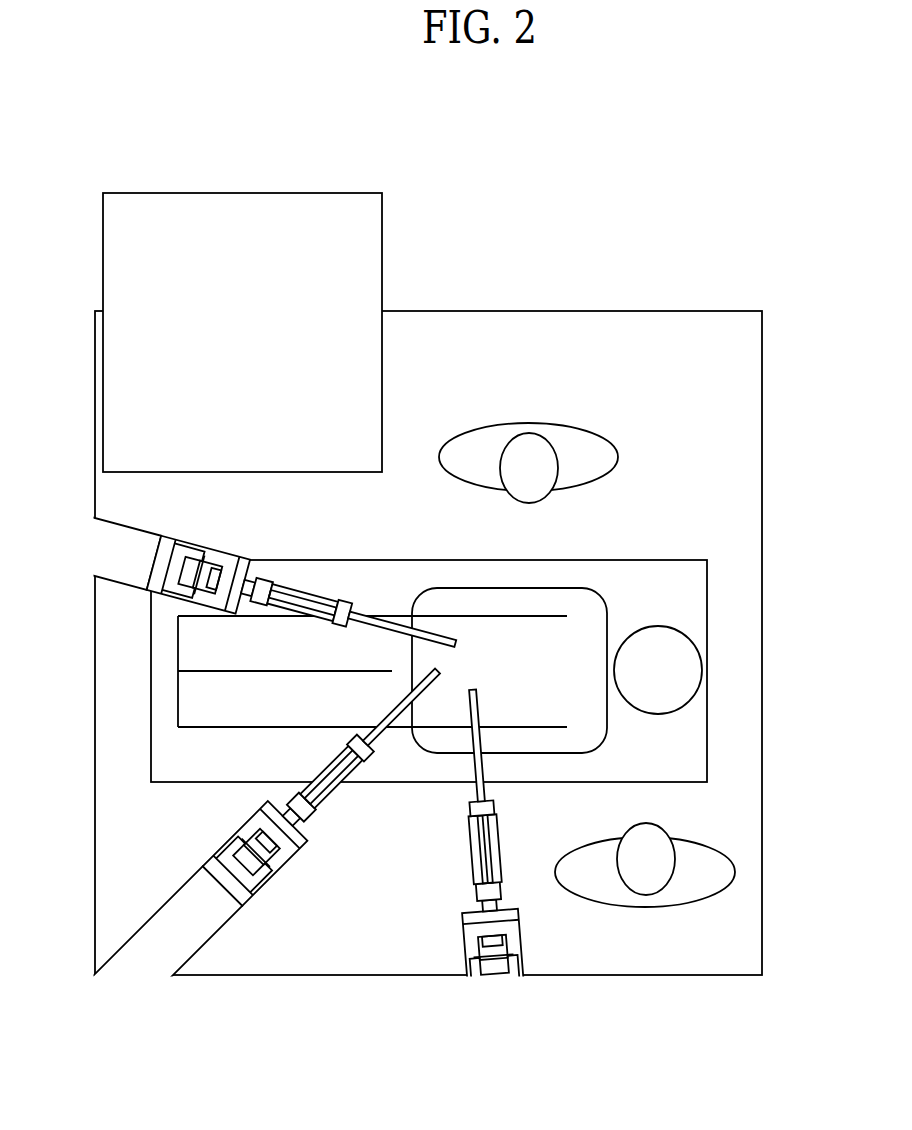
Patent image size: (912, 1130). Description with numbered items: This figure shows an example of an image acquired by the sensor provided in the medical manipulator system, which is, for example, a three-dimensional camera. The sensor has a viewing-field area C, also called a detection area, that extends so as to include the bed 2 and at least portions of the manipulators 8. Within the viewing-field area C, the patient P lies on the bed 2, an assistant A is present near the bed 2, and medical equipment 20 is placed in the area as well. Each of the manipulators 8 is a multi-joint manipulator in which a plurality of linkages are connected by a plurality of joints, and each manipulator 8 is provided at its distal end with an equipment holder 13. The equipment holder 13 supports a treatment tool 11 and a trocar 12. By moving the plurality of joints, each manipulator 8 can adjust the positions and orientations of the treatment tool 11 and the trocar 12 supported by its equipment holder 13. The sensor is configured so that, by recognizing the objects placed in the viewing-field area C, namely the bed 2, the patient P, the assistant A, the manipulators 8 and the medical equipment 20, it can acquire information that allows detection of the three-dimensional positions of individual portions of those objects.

The bed 2 is at (667, 544).
The manipulator 8 is at (232, 532).
The treatment tool 11 is at (290, 602).
The trocar 12 is at (397, 623).
The equipment holder 13 is at (305, 587).
The medical equipment 20 is at (382, 242).
The assistant A is at (528, 423).
The viewing-field area C is at (762, 451).
The patient P is at (607, 727).